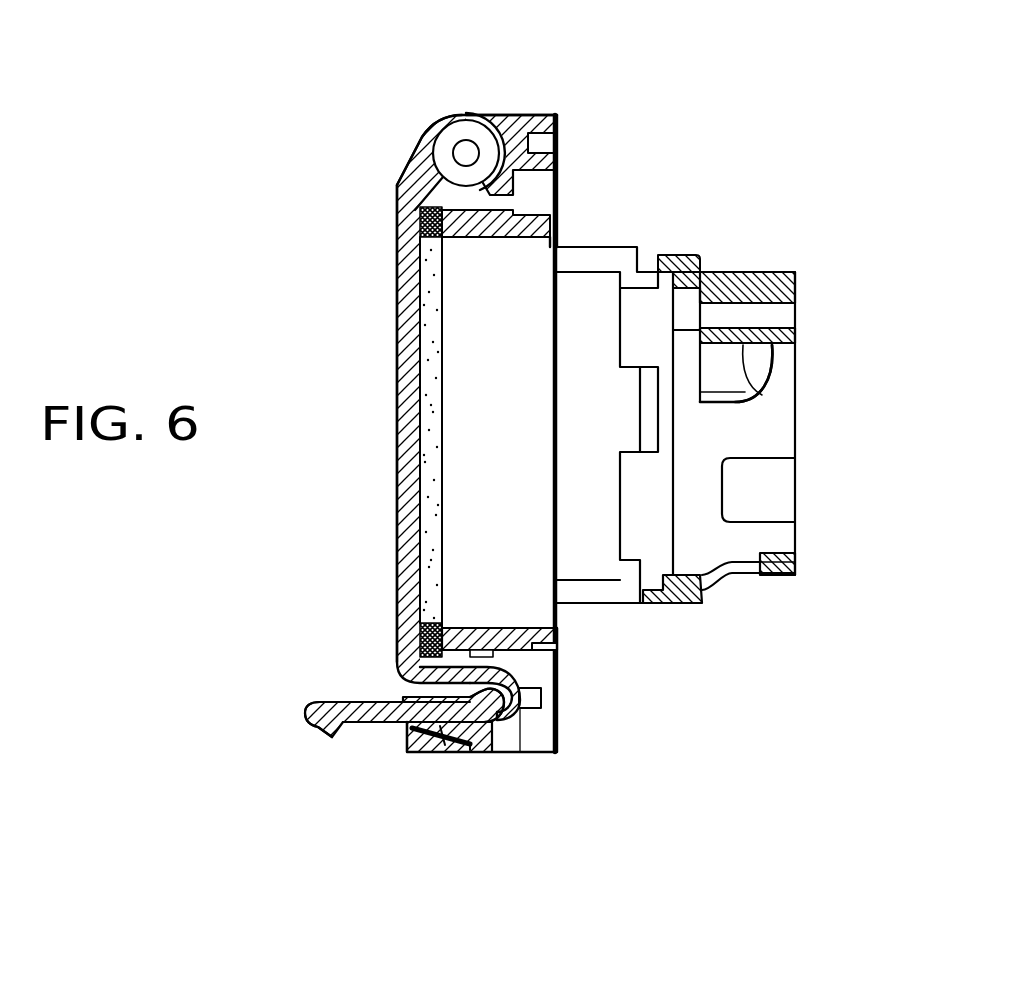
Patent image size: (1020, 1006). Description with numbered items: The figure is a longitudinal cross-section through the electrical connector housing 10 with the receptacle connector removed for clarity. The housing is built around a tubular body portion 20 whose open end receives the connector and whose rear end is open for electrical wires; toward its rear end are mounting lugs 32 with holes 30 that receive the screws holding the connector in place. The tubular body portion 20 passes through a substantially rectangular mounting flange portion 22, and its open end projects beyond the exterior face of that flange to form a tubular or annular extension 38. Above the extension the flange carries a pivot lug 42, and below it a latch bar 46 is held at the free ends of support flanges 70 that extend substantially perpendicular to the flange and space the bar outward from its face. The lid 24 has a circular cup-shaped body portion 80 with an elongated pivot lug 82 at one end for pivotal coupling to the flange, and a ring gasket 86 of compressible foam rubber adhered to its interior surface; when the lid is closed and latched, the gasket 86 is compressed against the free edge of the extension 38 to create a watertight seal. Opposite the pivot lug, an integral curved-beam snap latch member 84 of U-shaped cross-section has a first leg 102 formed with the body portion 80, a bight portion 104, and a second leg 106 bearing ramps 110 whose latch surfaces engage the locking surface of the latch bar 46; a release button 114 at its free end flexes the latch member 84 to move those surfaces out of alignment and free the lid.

The electrical connector housing 10 is at (341, 267).
The tubular body portion 20 is at (751, 270).
The mounting flange portion 22 is at (541, 109).
The lid 24 is at (397, 437).
The holes 30 is at (797, 316).
The mounting lugs 32 is at (753, 395).
The tubular or annular extension 38 is at (498, 627).
The pivot lug 42 is at (494, 113).
The latch bar 46 is at (452, 753).
The support flanges 70 is at (565, 752).
The body portion 80 is at (397, 548).
The pivot lug 82 is at (432, 114).
The curved-beam snap latch member 84 is at (356, 702).
The ring gasket 86 is at (448, 452).
The first leg 102 is at (458, 626).
The bight portion 104 is at (545, 690).
The second leg 106 is at (388, 745).
The ramps 110 is at (503, 730).
The release button 114 is at (334, 738).